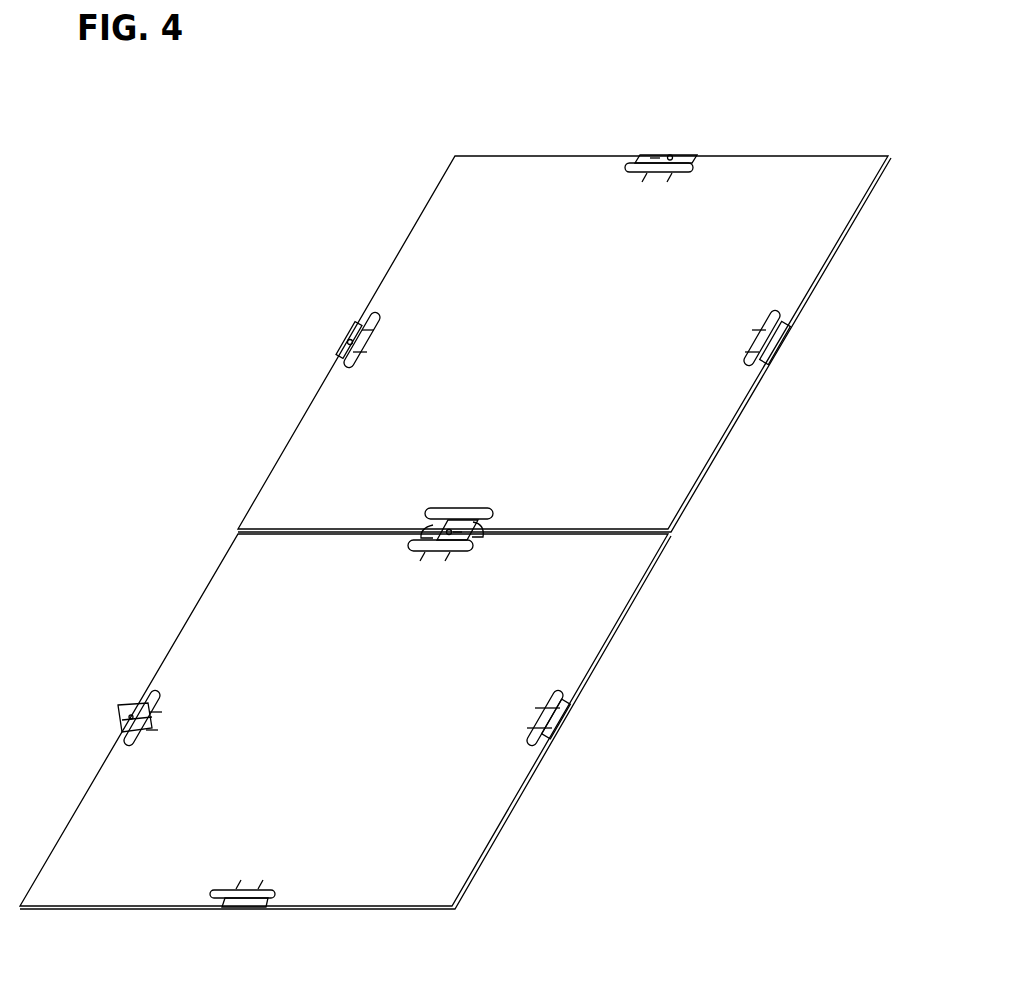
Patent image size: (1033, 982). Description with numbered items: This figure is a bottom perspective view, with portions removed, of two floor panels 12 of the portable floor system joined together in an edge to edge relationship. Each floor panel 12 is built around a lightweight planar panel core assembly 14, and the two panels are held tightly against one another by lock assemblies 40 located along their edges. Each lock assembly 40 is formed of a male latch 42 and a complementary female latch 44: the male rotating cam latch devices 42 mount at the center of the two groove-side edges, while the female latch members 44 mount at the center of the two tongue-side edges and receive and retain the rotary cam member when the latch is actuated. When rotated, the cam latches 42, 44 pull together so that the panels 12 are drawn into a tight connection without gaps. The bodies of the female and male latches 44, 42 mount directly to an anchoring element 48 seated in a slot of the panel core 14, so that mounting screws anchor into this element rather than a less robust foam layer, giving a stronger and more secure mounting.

The floor panel 12 is at (455, 532).
The planar panel core assembly 14 is at (554, 344).
The lock assembly 40 is at (492, 495).
The male latch 42 is at (678, 154).
The female latch 44 is at (782, 337).
The anchoring element 48 is at (684, 168).